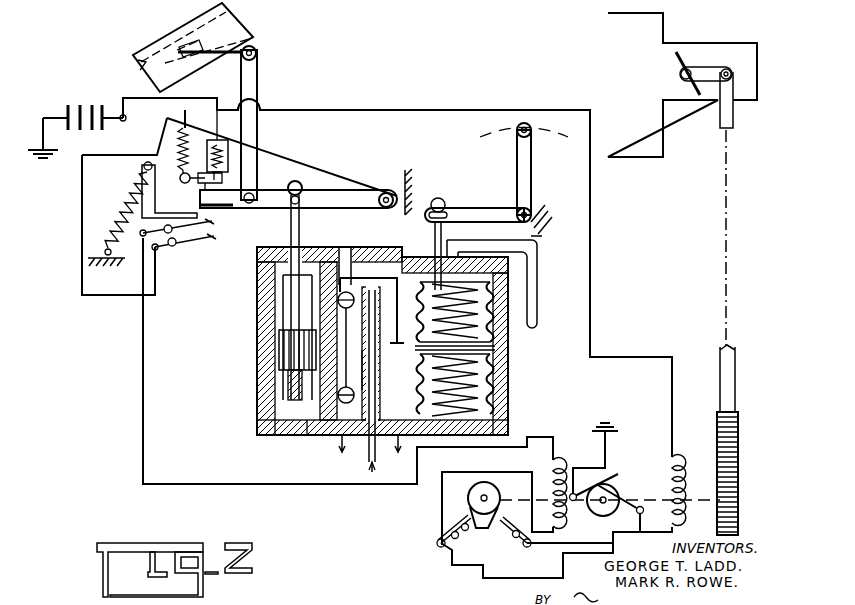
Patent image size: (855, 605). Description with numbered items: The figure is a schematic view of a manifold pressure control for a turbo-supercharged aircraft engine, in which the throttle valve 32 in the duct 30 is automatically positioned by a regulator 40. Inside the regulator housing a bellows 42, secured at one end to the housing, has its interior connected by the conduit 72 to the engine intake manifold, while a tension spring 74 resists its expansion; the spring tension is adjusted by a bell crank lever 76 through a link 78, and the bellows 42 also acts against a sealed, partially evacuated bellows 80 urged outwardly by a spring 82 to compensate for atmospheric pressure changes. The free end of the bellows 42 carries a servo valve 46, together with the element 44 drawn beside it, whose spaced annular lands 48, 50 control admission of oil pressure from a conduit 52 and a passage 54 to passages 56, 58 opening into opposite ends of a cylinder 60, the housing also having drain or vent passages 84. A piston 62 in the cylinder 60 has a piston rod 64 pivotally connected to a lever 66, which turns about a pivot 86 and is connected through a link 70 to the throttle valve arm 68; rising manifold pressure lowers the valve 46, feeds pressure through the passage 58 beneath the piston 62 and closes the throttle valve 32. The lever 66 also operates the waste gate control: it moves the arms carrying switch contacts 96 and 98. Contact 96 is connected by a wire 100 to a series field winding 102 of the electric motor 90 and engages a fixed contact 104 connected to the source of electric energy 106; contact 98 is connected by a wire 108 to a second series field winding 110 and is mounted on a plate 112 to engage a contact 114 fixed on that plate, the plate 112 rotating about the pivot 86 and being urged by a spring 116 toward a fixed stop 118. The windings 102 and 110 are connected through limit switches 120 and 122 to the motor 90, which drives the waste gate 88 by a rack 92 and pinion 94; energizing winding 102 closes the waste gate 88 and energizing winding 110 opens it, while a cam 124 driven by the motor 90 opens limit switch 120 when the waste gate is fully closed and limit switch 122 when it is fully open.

The duct 30 is at (146, 46).
The throttle valve 32 is at (180, 28).
The regulator 40 is at (258, 282).
The bellows 42 is at (478, 346).
The lever 44 is at (394, 270).
The servo valve 46 is at (374, 365).
The annular land 48 is at (344, 252).
The annular land 50 is at (356, 400).
The conduit 52 is at (362, 455).
The passage 54 is at (375, 380).
The passage 56 is at (336, 304).
The passage 58 is at (312, 428).
The cylinder 60 is at (280, 386).
The piston 62 is at (279, 352).
The piston rod 64 is at (290, 240).
The lever 66 is at (336, 190).
The throttle valve arm 68 is at (237, 58).
The link 70 is at (259, 80).
The conduit 72 is at (538, 280).
The tension spring 74 is at (462, 297).
The bell crank lever 76 is at (517, 174).
The link 78 is at (436, 245).
The sealed bellows 80 is at (470, 372).
The spring 82 is at (462, 400).
The drain or vent passages 84 is at (337, 439).
The pivot 86 is at (398, 188).
The waste gate 88 is at (690, 62).
The electric motor 90 is at (596, 486).
The rack 92 is at (733, 112).
The pinion 94 is at (738, 490).
The switch contact 96 is at (216, 227).
The switch contact 98 is at (196, 184).
The wire 100 is at (306, 492).
The series field winding 102 is at (548, 462).
The fixed contact 104 is at (214, 238).
The source of electric energy 106 is at (95, 100).
The wire 108 is at (398, 110).
The series field winding 110 is at (680, 463).
The plate 112 is at (309, 152).
The contact 114 is at (230, 170).
The spring 116 is at (125, 211).
The fixed stop 118 is at (166, 203).
The limit switch 120 is at (441, 545).
The limit switch 122 is at (527, 546).
The cam 124 is at (486, 494).